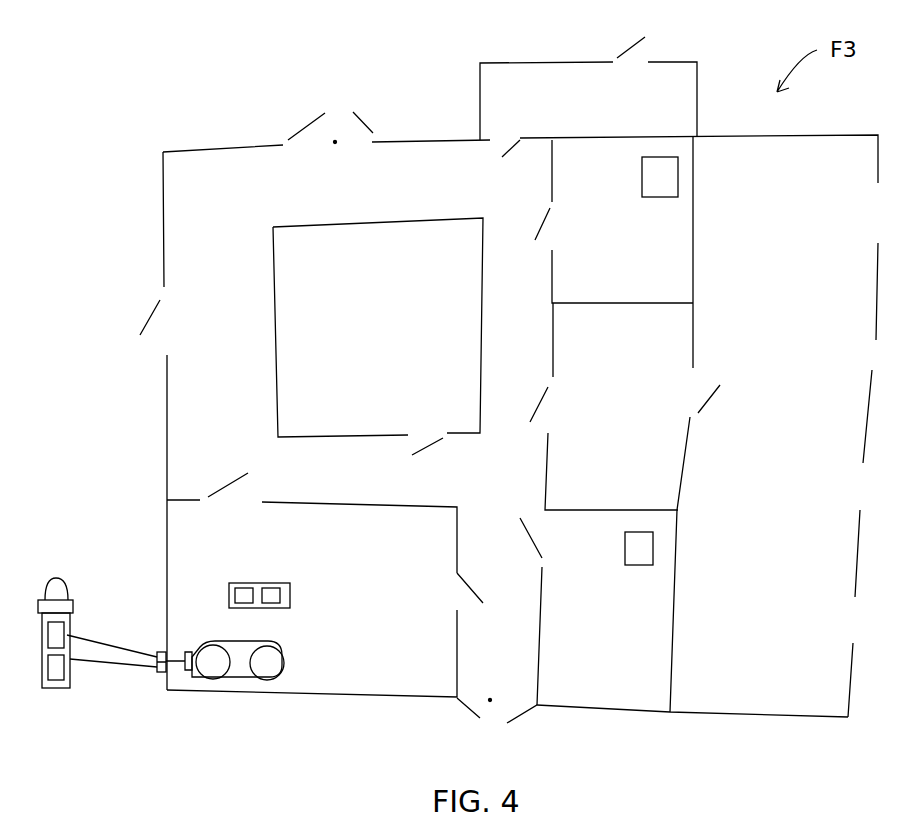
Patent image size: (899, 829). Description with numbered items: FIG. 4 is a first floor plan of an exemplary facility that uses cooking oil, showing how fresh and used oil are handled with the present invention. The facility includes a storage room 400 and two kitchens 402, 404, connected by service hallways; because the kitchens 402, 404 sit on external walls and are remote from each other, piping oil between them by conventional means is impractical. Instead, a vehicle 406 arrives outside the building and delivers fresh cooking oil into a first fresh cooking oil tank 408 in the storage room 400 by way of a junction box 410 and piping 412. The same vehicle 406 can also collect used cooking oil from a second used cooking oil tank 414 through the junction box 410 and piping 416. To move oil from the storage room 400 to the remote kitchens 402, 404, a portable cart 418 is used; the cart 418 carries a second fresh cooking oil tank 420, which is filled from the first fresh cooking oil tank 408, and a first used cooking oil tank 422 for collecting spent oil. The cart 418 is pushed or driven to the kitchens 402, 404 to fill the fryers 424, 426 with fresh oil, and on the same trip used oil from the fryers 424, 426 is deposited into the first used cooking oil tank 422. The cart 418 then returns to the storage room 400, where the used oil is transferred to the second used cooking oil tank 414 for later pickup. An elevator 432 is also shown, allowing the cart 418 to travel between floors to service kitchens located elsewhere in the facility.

The storage room 400 is at (395, 548).
The kitchen 402 is at (630, 288).
The kitchen 404 is at (610, 690).
The vehicle 406 is at (44, 693).
The first fresh cooking oil tank 408 is at (218, 670).
The junction box 410 is at (160, 676).
The piping 412 is at (100, 667).
The second used cooking oil tank 414 is at (267, 667).
The piping 416 is at (102, 647).
The portable cart 418 is at (292, 595).
The second fresh cooking oil tank 420 is at (233, 583).
The first used cooking oil tank 422 is at (272, 590).
The fryer 424 is at (670, 182).
The fryer 426 is at (645, 548).
The elevator 432 is at (625, 418).